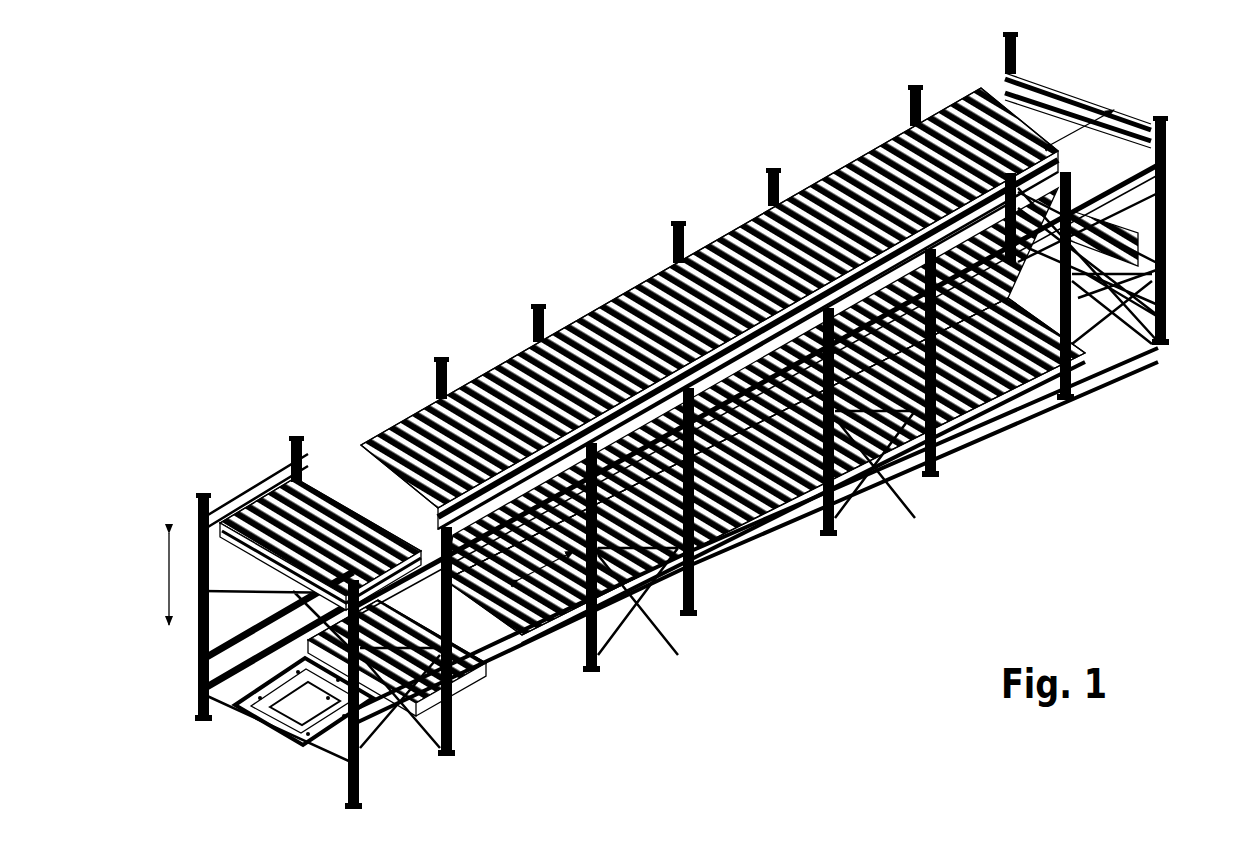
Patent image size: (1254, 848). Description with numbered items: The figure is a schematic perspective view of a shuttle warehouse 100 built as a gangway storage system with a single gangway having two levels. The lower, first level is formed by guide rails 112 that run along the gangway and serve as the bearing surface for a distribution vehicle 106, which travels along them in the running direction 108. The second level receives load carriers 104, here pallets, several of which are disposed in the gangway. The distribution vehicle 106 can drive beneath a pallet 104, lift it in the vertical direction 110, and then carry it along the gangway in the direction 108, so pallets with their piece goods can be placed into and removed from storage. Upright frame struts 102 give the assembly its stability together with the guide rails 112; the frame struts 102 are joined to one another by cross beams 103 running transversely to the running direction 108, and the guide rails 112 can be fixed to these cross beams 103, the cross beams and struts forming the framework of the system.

The shuttle warehouse 100 is at (706, 172).
The frame struts 102 is at (1041, 56).
The cross beams 103 is at (1106, 103).
The load carriers 104 is at (834, 162).
The distribution vehicle 106 is at (280, 725).
The direction 108 is at (563, 552).
The direction 110 is at (157, 579).
The guide rails 112 is at (491, 657).